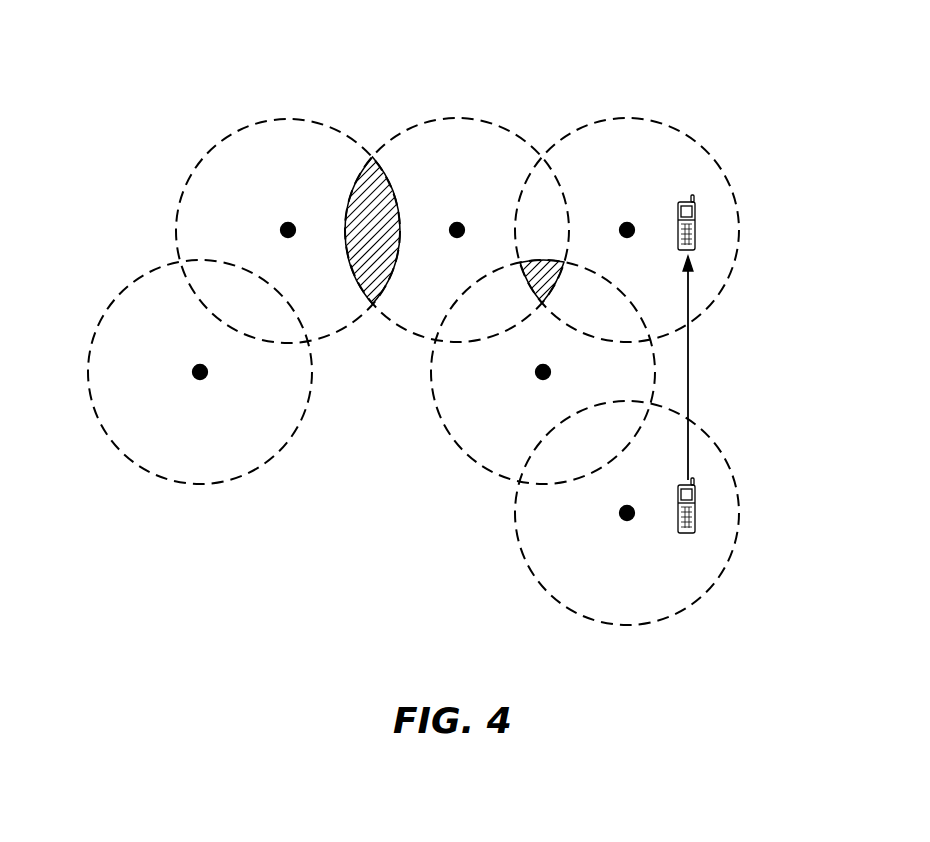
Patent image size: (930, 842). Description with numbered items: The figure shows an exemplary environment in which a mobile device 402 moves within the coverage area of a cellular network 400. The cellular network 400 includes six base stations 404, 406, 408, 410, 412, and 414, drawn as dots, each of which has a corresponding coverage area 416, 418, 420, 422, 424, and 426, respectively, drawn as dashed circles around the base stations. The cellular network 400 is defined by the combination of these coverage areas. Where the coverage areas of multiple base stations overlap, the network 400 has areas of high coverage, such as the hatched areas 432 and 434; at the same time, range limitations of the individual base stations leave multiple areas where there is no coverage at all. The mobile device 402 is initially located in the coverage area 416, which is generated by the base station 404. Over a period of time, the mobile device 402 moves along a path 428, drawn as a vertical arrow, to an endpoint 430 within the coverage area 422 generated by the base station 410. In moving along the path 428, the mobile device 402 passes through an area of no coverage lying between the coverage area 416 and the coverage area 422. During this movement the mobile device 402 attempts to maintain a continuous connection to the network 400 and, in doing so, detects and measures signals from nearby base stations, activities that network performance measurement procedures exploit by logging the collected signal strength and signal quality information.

The cellular network 400 is at (166, 101).
The mobile device 402 is at (695, 512).
The base station 404 is at (619, 519).
The base station 406 is at (535, 378).
The base station 408 is at (192, 378).
The base station 410 is at (627, 222).
The base station 412 is at (457, 222).
The base station 414 is at (288, 222).
The coverage area 416 is at (569, 607).
The coverage area 418 is at (484, 467).
The coverage area 420 is at (141, 467).
The coverage area 422 is at (605, 120).
The coverage area 424 is at (437, 120).
The coverage area 426 is at (268, 120).
The path 428 is at (690, 368).
The endpoint 430 is at (695, 226).
The area of high coverage 432 is at (557, 268).
The area of high coverage 434 is at (365, 266).